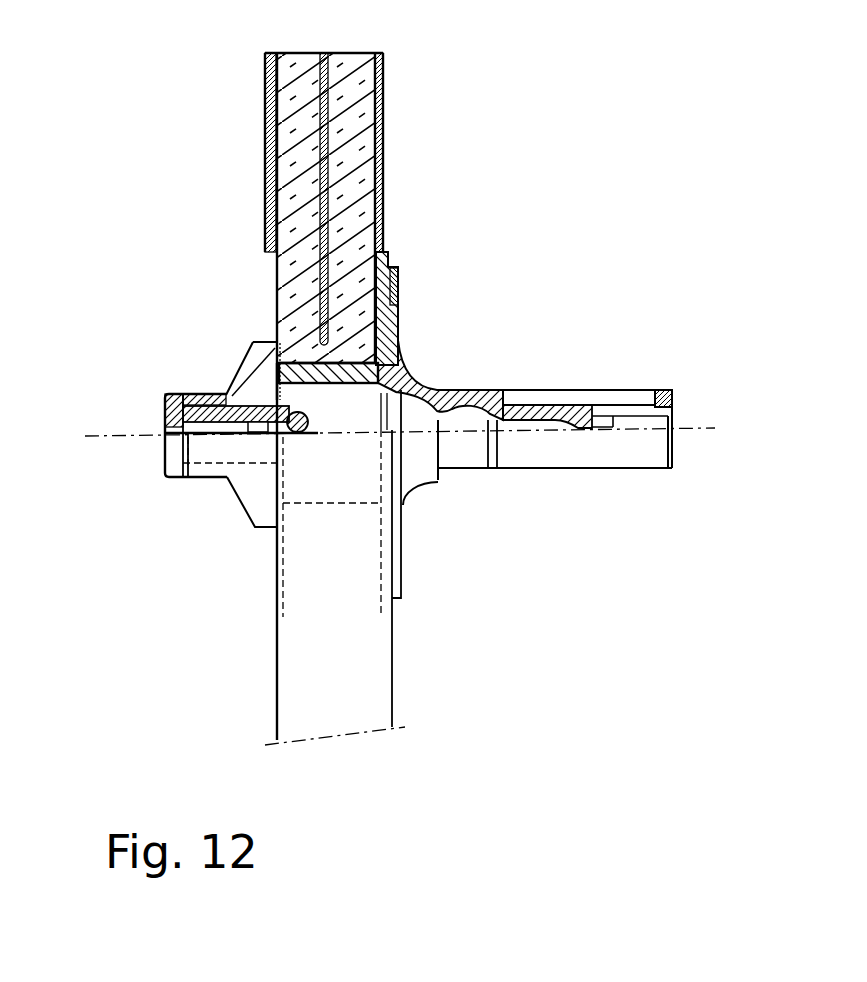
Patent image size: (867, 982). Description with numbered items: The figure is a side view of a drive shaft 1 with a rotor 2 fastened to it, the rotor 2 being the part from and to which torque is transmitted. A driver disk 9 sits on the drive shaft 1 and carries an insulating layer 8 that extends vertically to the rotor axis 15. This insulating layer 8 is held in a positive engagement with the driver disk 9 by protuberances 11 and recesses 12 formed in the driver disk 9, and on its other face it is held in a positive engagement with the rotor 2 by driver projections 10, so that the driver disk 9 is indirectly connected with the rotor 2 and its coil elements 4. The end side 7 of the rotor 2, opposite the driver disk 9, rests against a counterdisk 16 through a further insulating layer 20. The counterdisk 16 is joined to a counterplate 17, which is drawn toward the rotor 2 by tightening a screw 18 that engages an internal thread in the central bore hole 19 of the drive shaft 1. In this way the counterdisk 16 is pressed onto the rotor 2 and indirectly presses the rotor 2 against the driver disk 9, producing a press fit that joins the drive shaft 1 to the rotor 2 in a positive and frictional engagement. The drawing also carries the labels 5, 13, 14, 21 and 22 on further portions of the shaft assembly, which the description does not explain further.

The drive shaft 1 is at (662, 390).
The rotor 2 is at (383, 83).
The coil elements 4 is at (355, 62).
The outer tube layer 5 is at (275, 270).
The end side 7 is at (233, 113).
The insulating layer 8 is at (393, 268).
The driver disk 9 is at (403, 572).
The driver projections 10 is at (381, 255).
The protuberances 11 is at (399, 297).
The recesses 12 is at (399, 326).
The shaft 13 is at (617, 470).
The hatched band 14 is at (575, 405).
The rotor axis 15 is at (698, 430).
The counterdisk 16 is at (245, 362).
The counterplate 17 is at (168, 392).
The screw 18 is at (165, 428).
The central bore hole 19 is at (203, 432).
The insulating layer 20 is at (275, 342).
The fillet 21 is at (440, 480).
The ring 22 is at (497, 475).